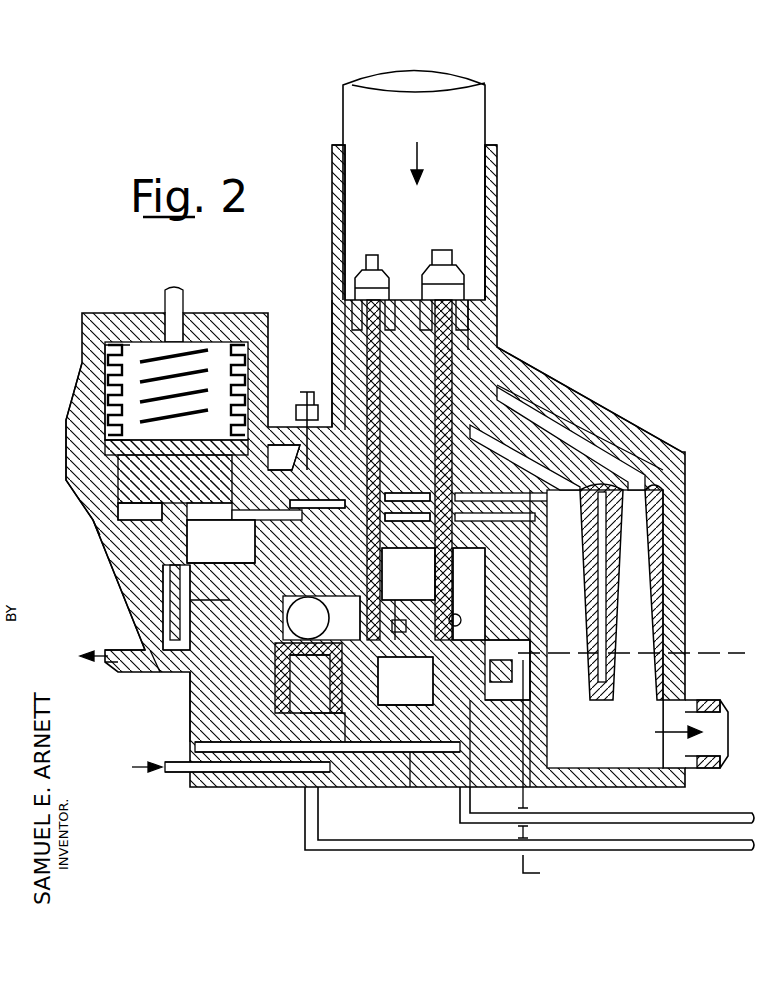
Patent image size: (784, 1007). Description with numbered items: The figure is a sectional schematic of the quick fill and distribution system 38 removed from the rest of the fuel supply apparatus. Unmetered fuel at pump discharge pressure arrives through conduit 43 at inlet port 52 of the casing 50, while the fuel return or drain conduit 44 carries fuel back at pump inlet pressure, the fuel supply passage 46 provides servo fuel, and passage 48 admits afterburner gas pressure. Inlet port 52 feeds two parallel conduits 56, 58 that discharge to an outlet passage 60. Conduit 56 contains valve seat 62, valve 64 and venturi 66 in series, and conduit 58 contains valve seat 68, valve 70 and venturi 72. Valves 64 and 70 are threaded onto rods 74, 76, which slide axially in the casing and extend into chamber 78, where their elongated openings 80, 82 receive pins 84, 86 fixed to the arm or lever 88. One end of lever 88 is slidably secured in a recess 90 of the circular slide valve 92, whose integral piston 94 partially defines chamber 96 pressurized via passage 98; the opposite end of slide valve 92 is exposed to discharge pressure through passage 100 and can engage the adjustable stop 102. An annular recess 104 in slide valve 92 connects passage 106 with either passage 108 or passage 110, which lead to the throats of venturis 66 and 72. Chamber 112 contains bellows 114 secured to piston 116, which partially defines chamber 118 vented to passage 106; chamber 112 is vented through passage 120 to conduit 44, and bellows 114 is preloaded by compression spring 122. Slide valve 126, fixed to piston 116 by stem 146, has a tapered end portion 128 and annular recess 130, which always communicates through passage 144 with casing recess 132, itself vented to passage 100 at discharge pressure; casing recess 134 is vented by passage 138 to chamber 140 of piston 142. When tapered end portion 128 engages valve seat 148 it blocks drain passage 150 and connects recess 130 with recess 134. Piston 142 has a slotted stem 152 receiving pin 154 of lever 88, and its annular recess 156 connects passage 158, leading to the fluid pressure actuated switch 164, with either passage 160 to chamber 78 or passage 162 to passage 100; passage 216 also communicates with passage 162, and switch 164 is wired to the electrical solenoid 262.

The quick fill and distribution system 38 is at (90, 286).
The conduit 43 is at (485, 102).
The fuel return or drain conduit 44 is at (110, 672).
The fuel supply passage 46 is at (168, 775).
The passage 48 is at (185, 300).
The casing 50 is at (538, 395).
The inlet port 52 is at (497, 148).
The conduit 56 is at (345, 375).
The conduit 58 is at (505, 372).
The outlet passage 60 is at (715, 762).
The valve seat 62 is at (352, 303).
The valve 64 is at (380, 268).
The venturi 66 is at (580, 680).
The valve seat 68 is at (470, 300).
The valve 70 is at (446, 262).
The venturi 72 is at (645, 680).
The rod 74 is at (345, 400).
The rod 76 is at (470, 355).
The chamber 78 is at (409, 603).
The elongated opening 80 is at (360, 618).
The elongated opening 82 is at (469, 594).
The pin 84 is at (360, 620).
The pin 86 is at (450, 620).
The arm or lever 88 is at (408, 574).
The recess 90 is at (308, 678).
The circular slide valve 92 is at (317, 532).
The piston 94 is at (310, 672).
The chamber 96 is at (310, 701).
The passage 98 is at (303, 824).
The passage 100 is at (250, 700).
The adjustable stop 102 is at (293, 426).
The annular recess 104 is at (295, 467).
The passage 106 is at (221, 543).
The passage 108 is at (340, 490).
The passage 110 is at (380, 531).
The chamber 112 is at (108, 380).
The bellows 114 is at (105, 350).
The piston 116 is at (176, 471).
The chamber 118 is at (140, 512).
The passage 120 is at (105, 548).
The compression spring 122 is at (110, 405).
The slide valve 126 is at (165, 614).
The tapered end portion 128 is at (170, 660).
The annular recess 130 is at (165, 592).
The annular recess 132 is at (145, 594).
The annular recess 134 is at (210, 600).
The passage 138 is at (210, 740).
The chamber 140 is at (405, 696).
The piston 142 is at (418, 778).
The passage 144 is at (190, 580).
The stem 146 is at (120, 530).
The valve seat 148 is at (160, 672).
The drain passage 150 is at (188, 672).
The slotted stem 152 is at (405, 681).
The pin 154 is at (398, 625).
The annular recess 156 is at (322, 716).
The passage 158 is at (500, 690).
The passage 160 is at (514, 638).
The passage 162 is at (476, 720).
The fluid pressure actuated switch 164 is at (498, 640).
The passage 216 is at (560, 812).
The electrical solenoid 262 is at (651, 668).